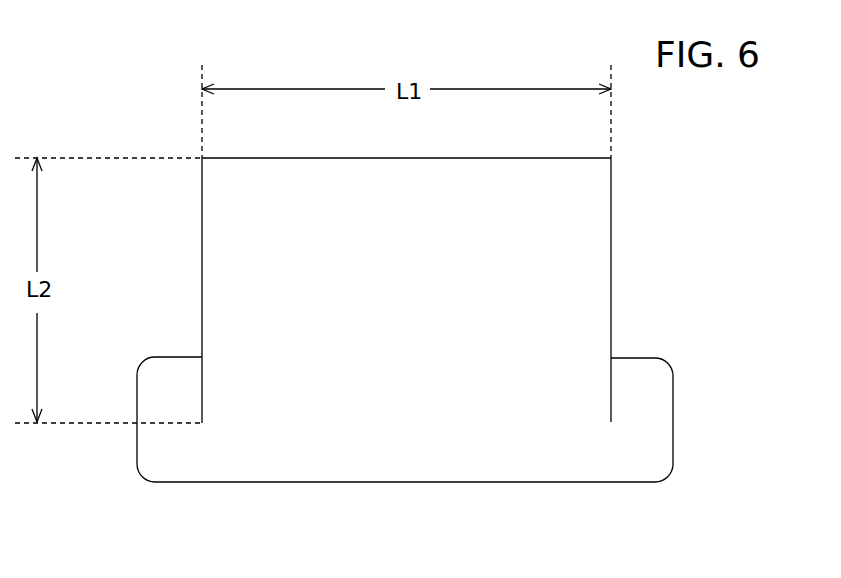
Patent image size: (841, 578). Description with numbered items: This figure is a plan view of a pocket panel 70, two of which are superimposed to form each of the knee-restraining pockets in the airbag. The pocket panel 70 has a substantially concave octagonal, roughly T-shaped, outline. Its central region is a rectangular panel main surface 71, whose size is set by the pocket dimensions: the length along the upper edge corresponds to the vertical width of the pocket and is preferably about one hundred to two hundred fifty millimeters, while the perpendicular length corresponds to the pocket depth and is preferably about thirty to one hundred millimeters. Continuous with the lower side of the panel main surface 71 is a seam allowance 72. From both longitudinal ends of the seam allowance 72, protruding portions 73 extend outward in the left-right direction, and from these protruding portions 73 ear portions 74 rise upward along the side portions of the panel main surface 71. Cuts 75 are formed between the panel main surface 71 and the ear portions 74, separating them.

The pocket panel 70 is at (645, 152).
The panel main surface 71 is at (588, 240).
The seam allowance 72 is at (410, 458).
The protruding portion 73 is at (157, 457).
The ear portion 74 is at (160, 388).
The cut 75 is at (193, 382).